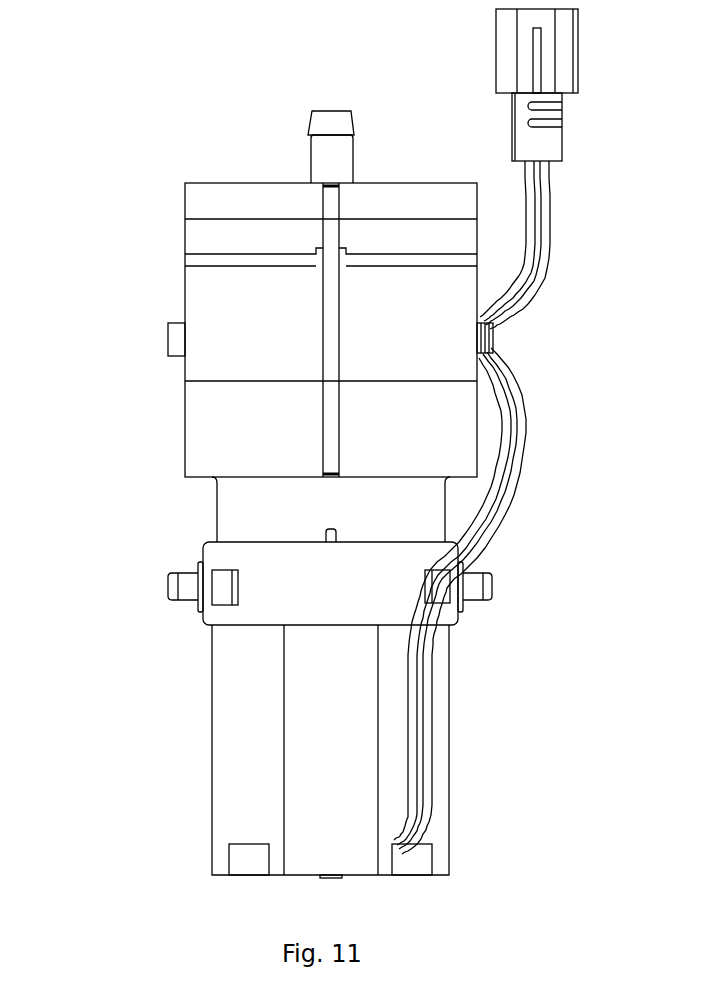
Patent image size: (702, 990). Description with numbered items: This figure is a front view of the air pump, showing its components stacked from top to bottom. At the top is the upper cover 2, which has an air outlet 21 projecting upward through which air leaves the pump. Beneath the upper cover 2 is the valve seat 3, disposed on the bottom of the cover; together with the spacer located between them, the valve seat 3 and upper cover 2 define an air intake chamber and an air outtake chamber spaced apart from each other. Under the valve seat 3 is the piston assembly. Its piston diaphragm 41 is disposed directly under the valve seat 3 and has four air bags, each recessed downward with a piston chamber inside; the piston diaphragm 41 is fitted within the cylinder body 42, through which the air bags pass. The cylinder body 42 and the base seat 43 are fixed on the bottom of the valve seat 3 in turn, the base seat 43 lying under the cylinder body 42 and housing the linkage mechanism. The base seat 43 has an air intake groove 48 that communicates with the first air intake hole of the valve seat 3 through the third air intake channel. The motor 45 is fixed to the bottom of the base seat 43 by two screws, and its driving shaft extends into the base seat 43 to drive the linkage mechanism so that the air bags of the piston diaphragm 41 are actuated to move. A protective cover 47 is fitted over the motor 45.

The upper cover 2 is at (247, 205).
The air outlet 21 is at (328, 152).
The valve seat 3 is at (209, 240).
The piston diaphragm 41 is at (198, 259).
The cylinder body 42 is at (210, 356).
The base seat 43 is at (215, 435).
The motor 45 is at (262, 775).
The protective cover 47 is at (267, 607).
The air intake groove 48 is at (326, 532).